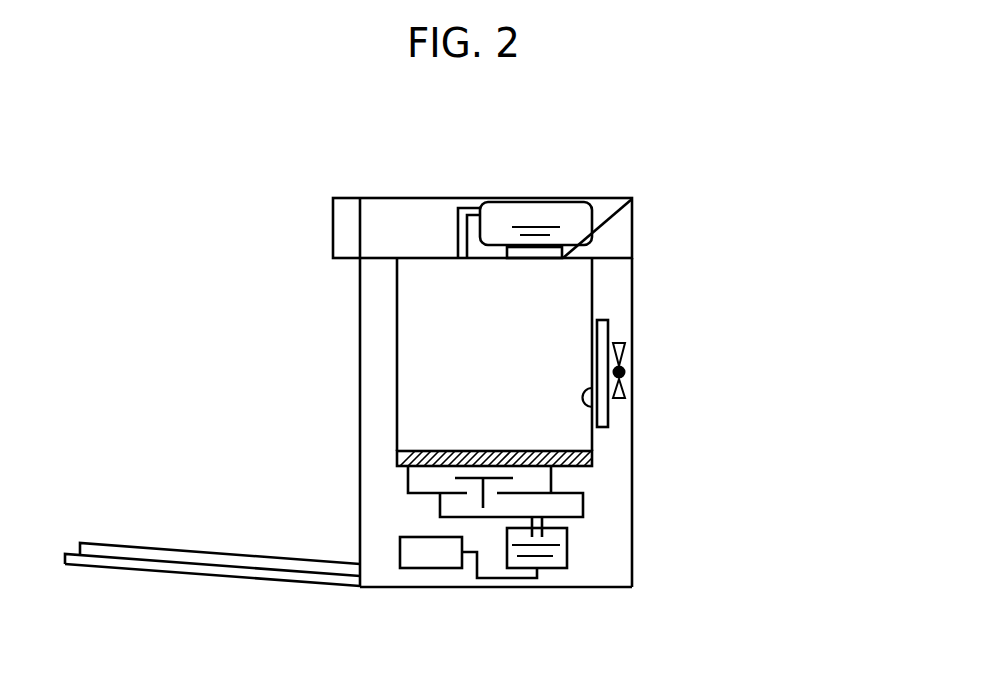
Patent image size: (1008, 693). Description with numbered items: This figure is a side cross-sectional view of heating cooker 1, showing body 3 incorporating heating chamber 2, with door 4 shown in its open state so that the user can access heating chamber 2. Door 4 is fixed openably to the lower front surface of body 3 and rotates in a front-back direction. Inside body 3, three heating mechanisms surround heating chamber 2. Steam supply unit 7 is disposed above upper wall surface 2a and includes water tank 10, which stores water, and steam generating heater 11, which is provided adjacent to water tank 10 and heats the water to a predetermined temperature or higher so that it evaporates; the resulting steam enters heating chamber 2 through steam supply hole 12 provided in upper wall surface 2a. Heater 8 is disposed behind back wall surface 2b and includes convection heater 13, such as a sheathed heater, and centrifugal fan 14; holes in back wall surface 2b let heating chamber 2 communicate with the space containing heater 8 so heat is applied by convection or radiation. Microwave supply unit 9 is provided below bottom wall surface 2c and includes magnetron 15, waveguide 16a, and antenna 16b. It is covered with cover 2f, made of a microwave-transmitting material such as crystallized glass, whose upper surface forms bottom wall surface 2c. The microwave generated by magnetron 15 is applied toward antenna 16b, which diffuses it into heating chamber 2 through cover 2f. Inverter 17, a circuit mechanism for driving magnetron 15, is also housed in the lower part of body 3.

The heating cooker 1 is at (687, 163).
The heating chamber 2 is at (417, 346).
The upper wall surface 2a is at (422, 258).
The back wall surface 2b is at (594, 408).
The bottom wall surface 2c is at (594, 450).
The cover 2f is at (593, 462).
The body 3 is at (338, 198).
The door 4 is at (128, 546).
The steam supply unit 7 is at (667, 142).
The heater 8 is at (723, 273).
The microwave supply unit 9 is at (817, 477).
The water tank 10 is at (540, 227).
The steam generating heater 11 is at (633, 198).
The steam supply hole 12 is at (460, 258).
The convection heater 13 is at (608, 329).
The centrifugal fan 14 is at (625, 364).
The magnetron 15 is at (562, 563).
The waveguide 16a is at (560, 512).
The antenna 16b is at (515, 479).
The inverter 17 is at (427, 555).